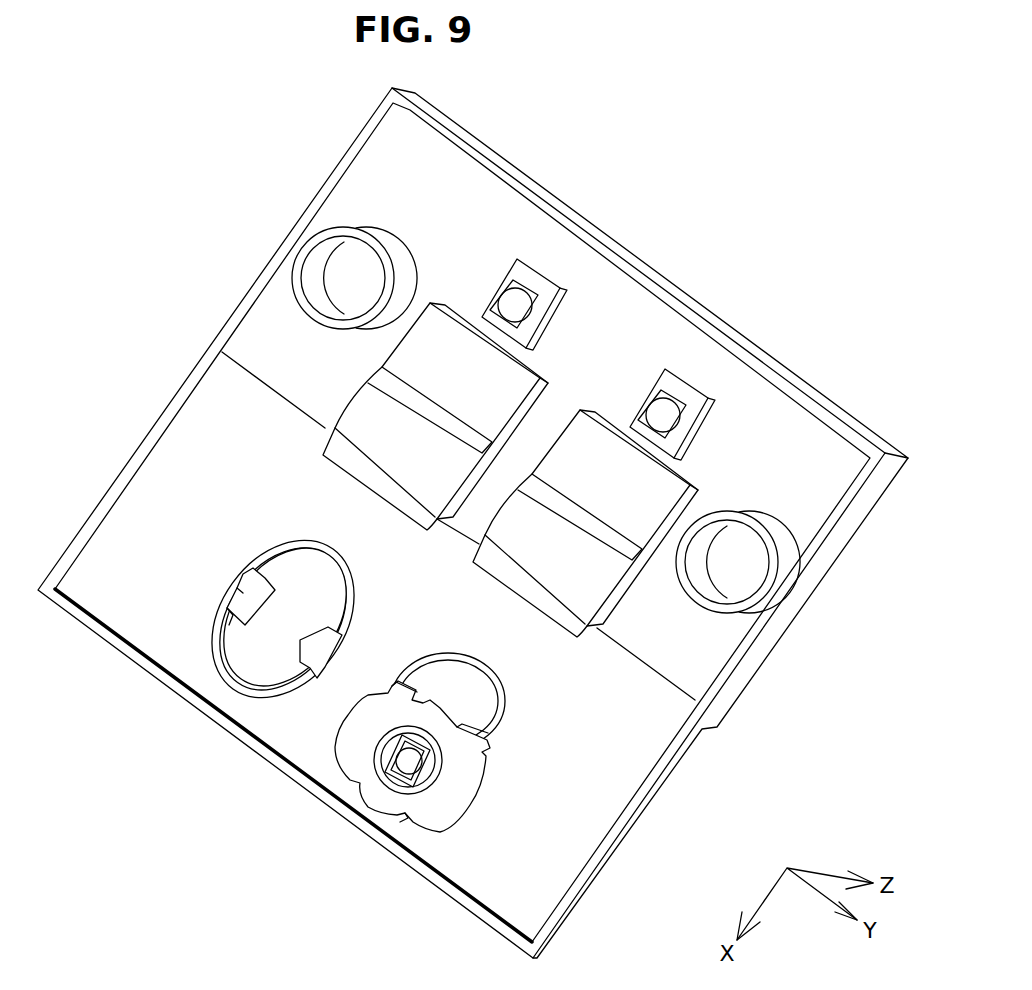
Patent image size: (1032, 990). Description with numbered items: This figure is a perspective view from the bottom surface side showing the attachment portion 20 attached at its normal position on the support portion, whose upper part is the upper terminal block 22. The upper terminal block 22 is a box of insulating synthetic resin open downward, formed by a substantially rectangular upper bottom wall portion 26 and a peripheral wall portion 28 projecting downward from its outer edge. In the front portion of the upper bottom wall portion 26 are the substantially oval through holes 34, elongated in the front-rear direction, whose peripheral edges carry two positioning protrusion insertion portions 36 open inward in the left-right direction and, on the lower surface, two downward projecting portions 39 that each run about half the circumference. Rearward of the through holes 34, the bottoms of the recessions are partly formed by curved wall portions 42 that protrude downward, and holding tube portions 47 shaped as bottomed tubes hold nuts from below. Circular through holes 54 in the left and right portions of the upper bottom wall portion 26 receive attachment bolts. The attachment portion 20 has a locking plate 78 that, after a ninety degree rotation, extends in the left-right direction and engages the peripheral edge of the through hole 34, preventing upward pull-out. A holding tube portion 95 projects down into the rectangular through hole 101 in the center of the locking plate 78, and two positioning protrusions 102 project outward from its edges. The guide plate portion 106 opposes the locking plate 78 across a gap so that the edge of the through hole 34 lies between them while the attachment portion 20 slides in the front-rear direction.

The attachment portion 20 is at (409, 832).
The upper terminal block 22 is at (780, 236).
The upper bottom wall portion 26 is at (622, 757).
The peripheral wall portion 28 is at (795, 613).
The through hole 34 is at (250, 673).
The positioning protrusion insertion portion 36 is at (238, 592).
The downward projecting portion 39 is at (270, 702).
The curved wall portion 42 is at (385, 447).
The holding tube portion 47 is at (512, 305).
The through hole 54 is at (745, 558).
The locking plate 78 is at (455, 803).
The holding tube portion 95 is at (410, 766).
The through hole 101 is at (390, 758).
The positioning protrusion 102 is at (432, 716).
The guide plate portion 106 is at (474, 728).